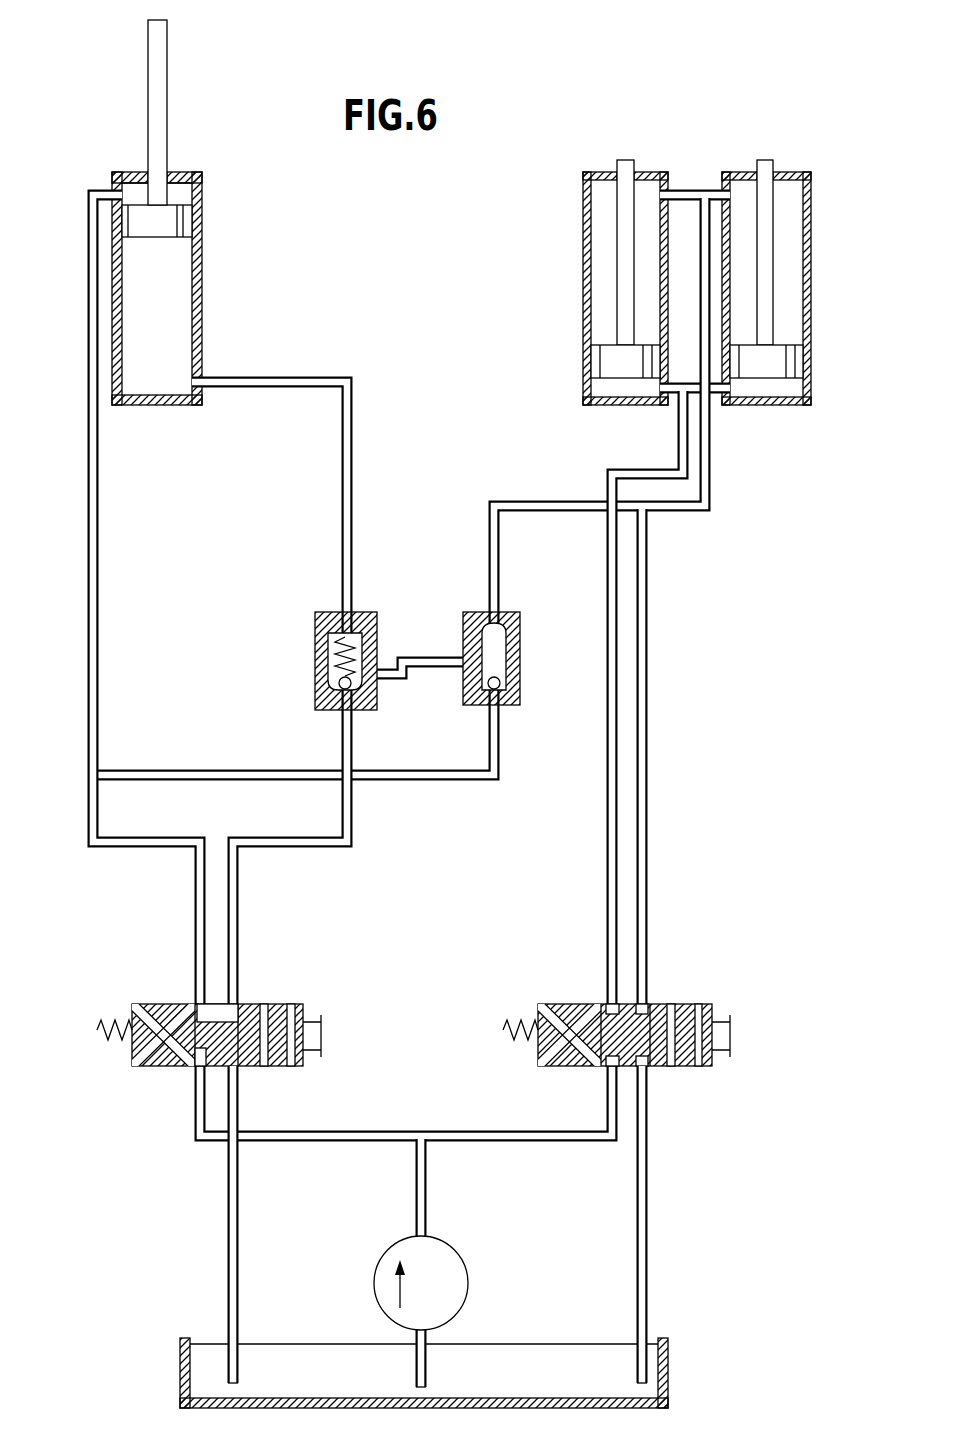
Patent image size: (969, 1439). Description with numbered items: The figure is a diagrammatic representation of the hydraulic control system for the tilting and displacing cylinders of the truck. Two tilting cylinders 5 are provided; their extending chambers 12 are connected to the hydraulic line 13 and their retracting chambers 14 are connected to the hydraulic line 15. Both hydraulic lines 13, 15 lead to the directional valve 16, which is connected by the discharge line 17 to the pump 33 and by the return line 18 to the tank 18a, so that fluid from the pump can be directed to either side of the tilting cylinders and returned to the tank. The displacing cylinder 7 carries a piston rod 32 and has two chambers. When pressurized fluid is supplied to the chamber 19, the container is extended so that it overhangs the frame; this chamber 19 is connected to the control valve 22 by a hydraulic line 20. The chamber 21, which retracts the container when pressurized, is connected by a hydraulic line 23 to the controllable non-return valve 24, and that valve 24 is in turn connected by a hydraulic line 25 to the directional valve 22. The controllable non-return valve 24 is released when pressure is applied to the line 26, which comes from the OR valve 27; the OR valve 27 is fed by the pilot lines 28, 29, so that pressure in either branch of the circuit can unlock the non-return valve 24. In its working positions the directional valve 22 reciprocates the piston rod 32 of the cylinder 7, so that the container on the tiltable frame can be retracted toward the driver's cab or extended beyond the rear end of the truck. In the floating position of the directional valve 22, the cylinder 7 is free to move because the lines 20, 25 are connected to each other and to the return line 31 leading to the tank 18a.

The tilting cylinders 5 is at (690, 274).
The cylinder 7 is at (203, 328).
The extending chambers 12 is at (617, 388).
The hydraulic line 13 is at (627, 770).
The retracting chambers 14 is at (605, 226).
The hydraulic line 15 is at (648, 820).
The directional valve 16 is at (652, 1004).
The discharge line 17 is at (480, 1142).
The return line 18 is at (642, 1248).
The tank 18a is at (543, 1383).
The chamber 19 is at (186, 193).
The hydraulic line 20 is at (98, 606).
The chamber 21 is at (142, 302).
The directional valve 22 is at (160, 1005).
The hydraulic line 23 is at (342, 500).
The controllable non-return valve 24 is at (315, 662).
The hydraulic line 25 is at (238, 930).
The line 26 is at (416, 680).
The OR valve 27 is at (510, 617).
The pilot line 28 is at (500, 500).
The pilot line 29 is at (158, 772).
The return line 31 is at (232, 1262).
The piston rod 32 is at (168, 110).
The pump 33 is at (378, 1272).